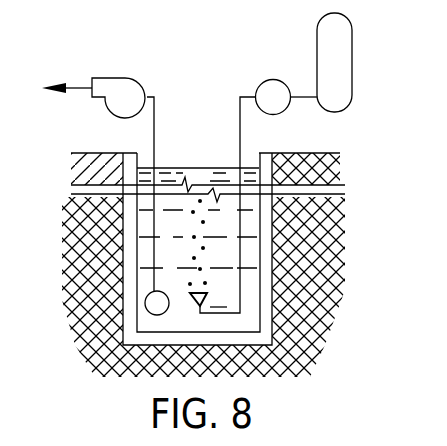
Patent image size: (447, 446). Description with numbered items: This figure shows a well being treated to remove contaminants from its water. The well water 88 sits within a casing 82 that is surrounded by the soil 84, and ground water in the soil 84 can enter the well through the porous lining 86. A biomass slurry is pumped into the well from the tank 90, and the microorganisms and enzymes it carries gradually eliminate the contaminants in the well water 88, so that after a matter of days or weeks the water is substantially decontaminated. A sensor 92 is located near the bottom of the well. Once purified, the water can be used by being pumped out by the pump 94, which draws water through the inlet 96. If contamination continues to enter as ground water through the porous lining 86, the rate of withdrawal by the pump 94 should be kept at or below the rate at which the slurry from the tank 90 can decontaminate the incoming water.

The casing 82 is at (250, 286).
The soil 84 is at (306, 153).
The porous lining 86 is at (272, 209).
The well water 88 is at (205, 168).
The tank 90 is at (318, 45).
The sensor 92 is at (207, 296).
The pump 94 is at (122, 78).
The inlet 96 is at (150, 308).